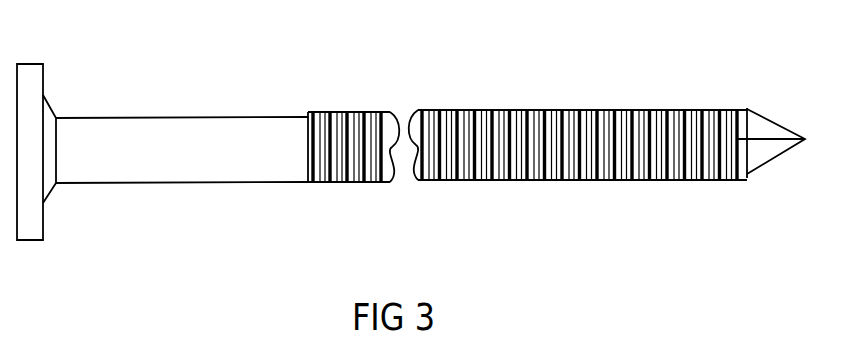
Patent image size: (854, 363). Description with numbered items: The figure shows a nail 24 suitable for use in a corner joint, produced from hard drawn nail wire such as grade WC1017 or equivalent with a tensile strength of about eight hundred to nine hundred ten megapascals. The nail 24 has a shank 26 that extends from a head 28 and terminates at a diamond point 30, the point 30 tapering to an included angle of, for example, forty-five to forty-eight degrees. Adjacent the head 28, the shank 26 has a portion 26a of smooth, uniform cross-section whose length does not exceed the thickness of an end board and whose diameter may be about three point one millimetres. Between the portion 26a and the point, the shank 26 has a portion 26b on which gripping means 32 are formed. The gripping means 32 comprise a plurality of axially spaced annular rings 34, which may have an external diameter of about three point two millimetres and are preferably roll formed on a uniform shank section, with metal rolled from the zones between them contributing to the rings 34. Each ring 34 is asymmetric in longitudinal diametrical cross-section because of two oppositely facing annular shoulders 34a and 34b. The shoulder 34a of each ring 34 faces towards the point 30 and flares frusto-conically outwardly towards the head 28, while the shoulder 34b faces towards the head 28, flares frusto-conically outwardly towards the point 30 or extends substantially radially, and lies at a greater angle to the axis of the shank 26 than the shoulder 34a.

The nail 24 is at (414, 162).
The shank 26 is at (431, 150).
The portion of smooth, uniform cross-section 26a is at (305, 97).
The portion on which gripping means are formed 26b is at (511, 155).
The head 28 is at (30, 77).
The diamond point 30 is at (762, 152).
The gripping means 32 is at (511, 155).
The annular rings 34 is at (511, 155).
The annular shoulder 34a is at (317, 158).
The annular shoulder 34b is at (733, 185).